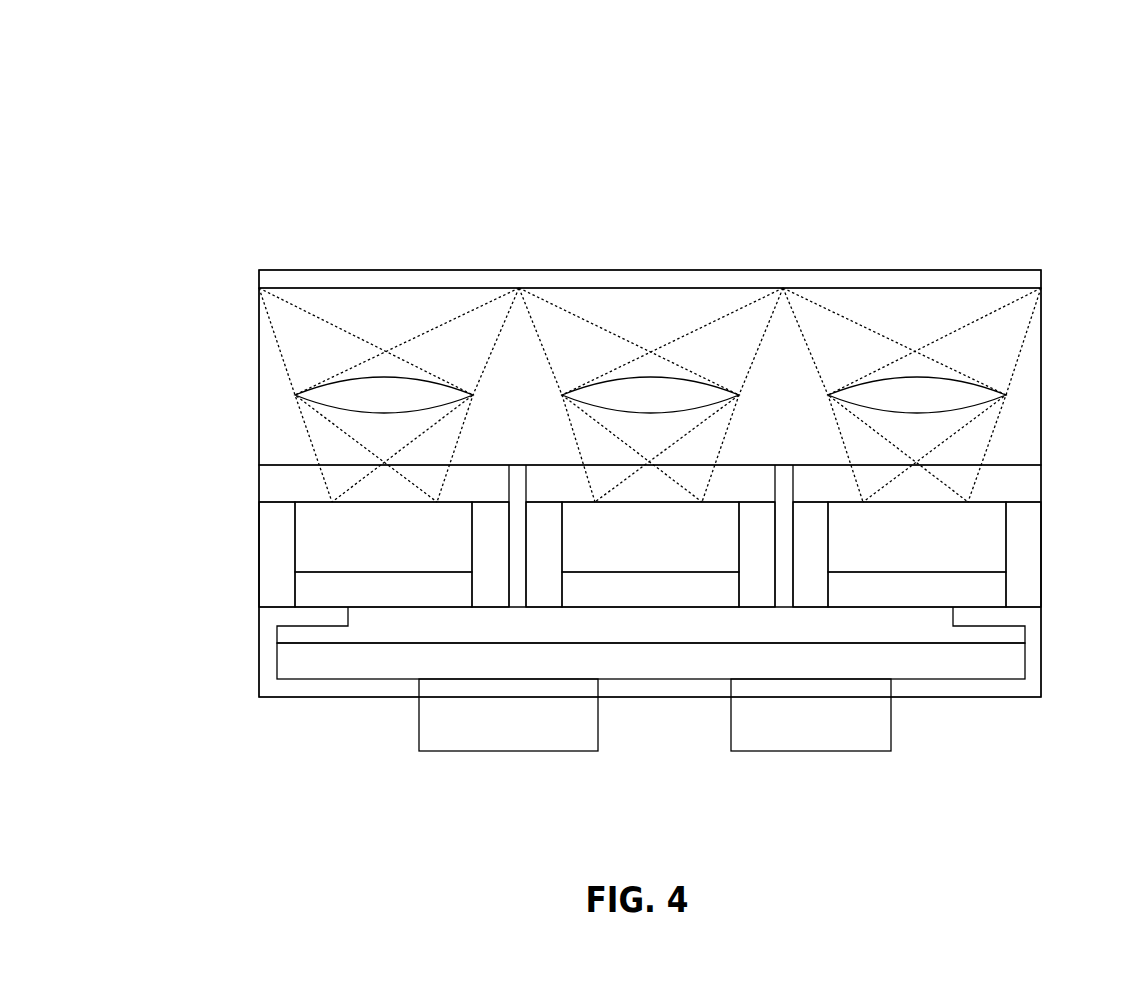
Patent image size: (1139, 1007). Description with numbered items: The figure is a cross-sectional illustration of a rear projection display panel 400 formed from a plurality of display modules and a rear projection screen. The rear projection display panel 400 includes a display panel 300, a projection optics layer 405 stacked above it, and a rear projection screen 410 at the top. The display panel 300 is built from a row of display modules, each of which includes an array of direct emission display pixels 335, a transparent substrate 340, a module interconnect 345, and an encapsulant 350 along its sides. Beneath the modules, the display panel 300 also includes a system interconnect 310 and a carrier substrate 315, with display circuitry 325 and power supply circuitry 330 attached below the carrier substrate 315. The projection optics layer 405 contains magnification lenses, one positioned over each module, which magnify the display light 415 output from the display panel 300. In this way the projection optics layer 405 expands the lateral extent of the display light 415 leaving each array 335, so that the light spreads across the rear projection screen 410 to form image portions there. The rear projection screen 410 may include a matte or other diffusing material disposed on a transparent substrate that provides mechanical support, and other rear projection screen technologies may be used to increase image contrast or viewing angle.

The rear projection display panel 400 is at (272, 122).
The projection optics layer 405 is at (242, 462).
The rear projection screen 410 is at (972, 280).
The display light 415 is at (457, 440).
The display panel 300 is at (242, 750).
The transparent substrate 340 is at (369, 495).
The array of direct emission display pixels 335 is at (369, 548).
The module interconnect 345 is at (369, 603).
The encapsulant 350 is at (263, 563).
The system interconnect 310 is at (780, 633).
The carrier substrate 315 is at (767, 670).
The display circuitry 325 is at (508, 715).
The power supply circuitry 330 is at (811, 715).